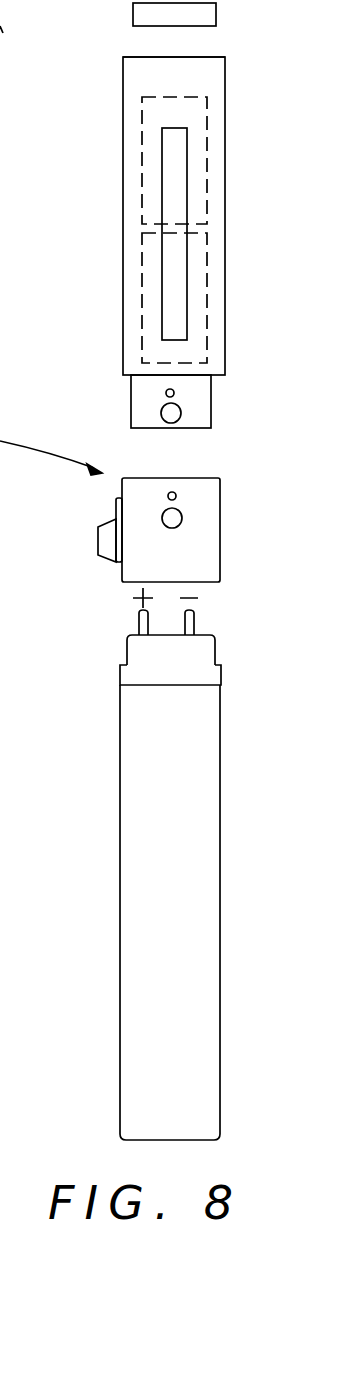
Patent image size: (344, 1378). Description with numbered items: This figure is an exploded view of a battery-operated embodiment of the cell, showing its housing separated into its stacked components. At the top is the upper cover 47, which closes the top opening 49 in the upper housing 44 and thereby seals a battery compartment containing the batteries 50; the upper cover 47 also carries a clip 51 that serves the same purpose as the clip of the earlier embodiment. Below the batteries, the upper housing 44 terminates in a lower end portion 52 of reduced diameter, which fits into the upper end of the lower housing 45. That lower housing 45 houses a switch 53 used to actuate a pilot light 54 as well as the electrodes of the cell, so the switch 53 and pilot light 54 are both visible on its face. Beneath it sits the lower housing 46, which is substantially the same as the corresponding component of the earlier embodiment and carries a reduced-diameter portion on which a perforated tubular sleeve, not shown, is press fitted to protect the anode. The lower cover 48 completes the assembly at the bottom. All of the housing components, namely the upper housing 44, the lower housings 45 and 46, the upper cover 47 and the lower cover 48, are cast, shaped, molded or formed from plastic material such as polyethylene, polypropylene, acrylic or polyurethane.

The upper housing 44 is at (123, 276).
The lower housing 45 is at (131, 486).
The lower housing 46 is at (124, 673).
The upper cover 47 is at (133, 10).
The lower cover 48 is at (130, 1009).
The top opening 49 is at (153, 57).
The batteries 50 is at (141, 129).
The clip 51 is at (170, 168).
The lower end portion 52 is at (137, 403).
The switch 53 is at (97, 535).
The pilot light 54 is at (167, 515).